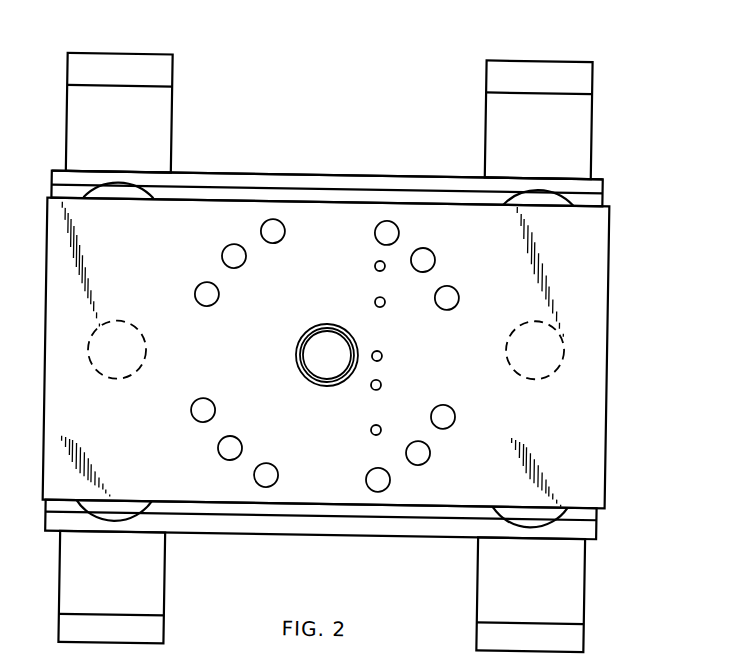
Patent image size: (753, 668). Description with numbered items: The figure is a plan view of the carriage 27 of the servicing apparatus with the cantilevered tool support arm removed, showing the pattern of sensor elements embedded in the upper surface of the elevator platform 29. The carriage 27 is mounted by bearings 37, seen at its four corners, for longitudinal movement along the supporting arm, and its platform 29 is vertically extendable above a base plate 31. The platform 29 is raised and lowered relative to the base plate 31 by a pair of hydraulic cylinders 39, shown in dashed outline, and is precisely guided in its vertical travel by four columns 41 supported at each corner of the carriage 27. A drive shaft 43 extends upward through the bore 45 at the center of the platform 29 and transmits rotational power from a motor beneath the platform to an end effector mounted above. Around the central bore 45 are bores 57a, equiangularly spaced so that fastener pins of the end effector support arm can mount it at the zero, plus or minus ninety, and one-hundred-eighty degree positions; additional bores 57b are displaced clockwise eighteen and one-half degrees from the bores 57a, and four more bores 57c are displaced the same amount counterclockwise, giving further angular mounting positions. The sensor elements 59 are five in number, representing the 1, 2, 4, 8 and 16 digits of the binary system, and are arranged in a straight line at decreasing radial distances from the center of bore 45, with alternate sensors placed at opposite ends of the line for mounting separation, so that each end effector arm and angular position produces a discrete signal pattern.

The carriage 27 is at (306, 176).
The platform 29 is at (607, 480).
The base plate 31 is at (599, 525).
The bearings 37 is at (168, 100).
The hydraulic cylinders 39 is at (105, 381).
The columns 41 is at (106, 188).
The drive shaft 43 is at (326, 324).
The bore 45 is at (296, 355).
The bores 57a is at (222, 251).
The additional bores 57b is at (282, 228).
The bores 57c is at (196, 288).
The sensor elements 59 is at (369, 348).
The binary digit 1 sensor element 1 is at (389, 265).
The binary digit 2 sensor element 2 is at (351, 416).
The binary digit 4 sensor element 4 is at (388, 303).
The binary digit 8 sensor element 8 is at (388, 388).
The binary digit 16 sensor element 16 is at (392, 356).